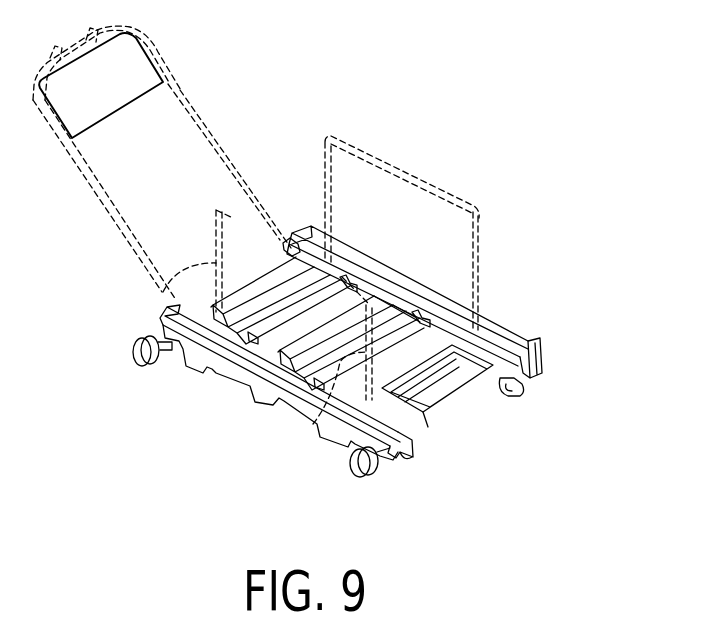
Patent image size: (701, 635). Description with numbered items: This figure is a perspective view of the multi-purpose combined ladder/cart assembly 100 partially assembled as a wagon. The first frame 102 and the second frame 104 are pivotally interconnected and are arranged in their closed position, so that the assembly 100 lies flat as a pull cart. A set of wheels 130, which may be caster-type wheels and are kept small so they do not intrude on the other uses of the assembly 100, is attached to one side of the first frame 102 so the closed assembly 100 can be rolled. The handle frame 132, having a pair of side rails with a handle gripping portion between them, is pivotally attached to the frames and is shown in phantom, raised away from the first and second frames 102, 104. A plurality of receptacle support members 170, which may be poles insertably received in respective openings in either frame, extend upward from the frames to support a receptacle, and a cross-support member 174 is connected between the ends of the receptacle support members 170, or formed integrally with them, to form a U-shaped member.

The multi-purpose combined ladder/cart assembly 100 is at (464, 64).
The first frame 102 is at (398, 458).
The second frame 104 is at (523, 351).
The wheels 130 is at (364, 478).
The handle frame 132 is at (181, 86).
The receptacle support members 170 is at (323, 190).
The cross-support members 174 is at (438, 196).